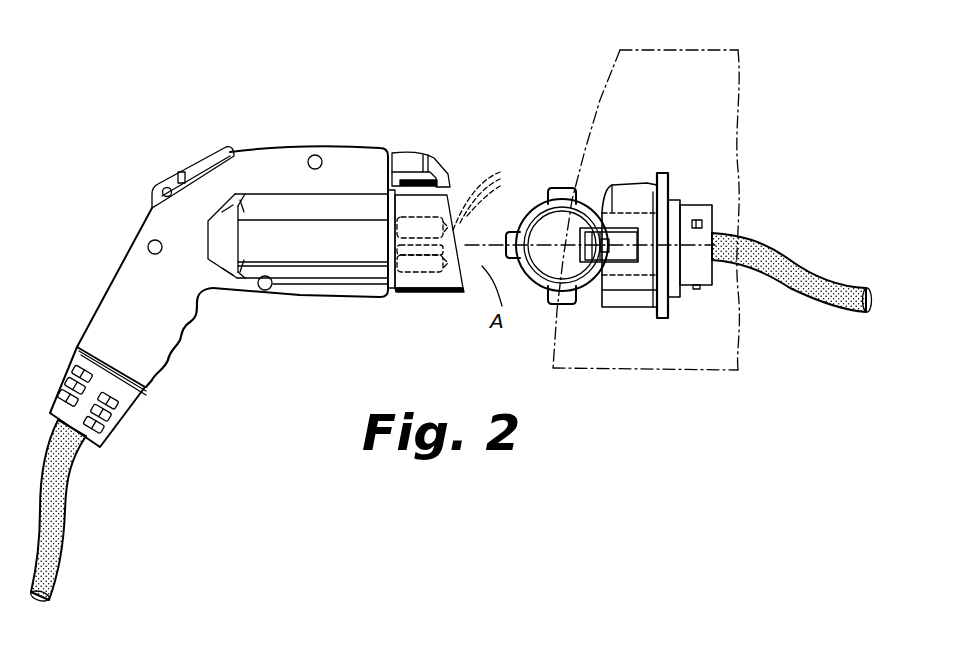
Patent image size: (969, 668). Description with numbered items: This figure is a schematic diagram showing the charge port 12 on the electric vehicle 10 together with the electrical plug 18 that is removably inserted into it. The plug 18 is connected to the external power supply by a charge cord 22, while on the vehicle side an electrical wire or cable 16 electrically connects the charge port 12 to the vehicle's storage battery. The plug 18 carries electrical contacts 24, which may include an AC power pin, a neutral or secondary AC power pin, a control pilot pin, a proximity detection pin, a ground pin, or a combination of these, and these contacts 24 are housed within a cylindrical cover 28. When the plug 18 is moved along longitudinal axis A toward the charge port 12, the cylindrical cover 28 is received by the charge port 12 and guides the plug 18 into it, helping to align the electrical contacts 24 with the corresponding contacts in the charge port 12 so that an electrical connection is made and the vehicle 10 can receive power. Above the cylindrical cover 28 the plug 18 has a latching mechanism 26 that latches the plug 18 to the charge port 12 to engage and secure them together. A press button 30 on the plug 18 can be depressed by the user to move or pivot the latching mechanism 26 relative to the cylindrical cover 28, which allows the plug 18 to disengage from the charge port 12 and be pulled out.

The electric vehicle 10 is at (600, 97).
The charge port 12 is at (618, 160).
The electrical wire or cable 16 is at (782, 243).
The electrical plug 18 is at (243, 94).
The charge cord 22 is at (67, 535).
The electrical contacts 24 is at (492, 198).
The latching mechanism 26 is at (438, 163).
The cylindrical cover 28 is at (430, 293).
The press button 30 is at (197, 154).